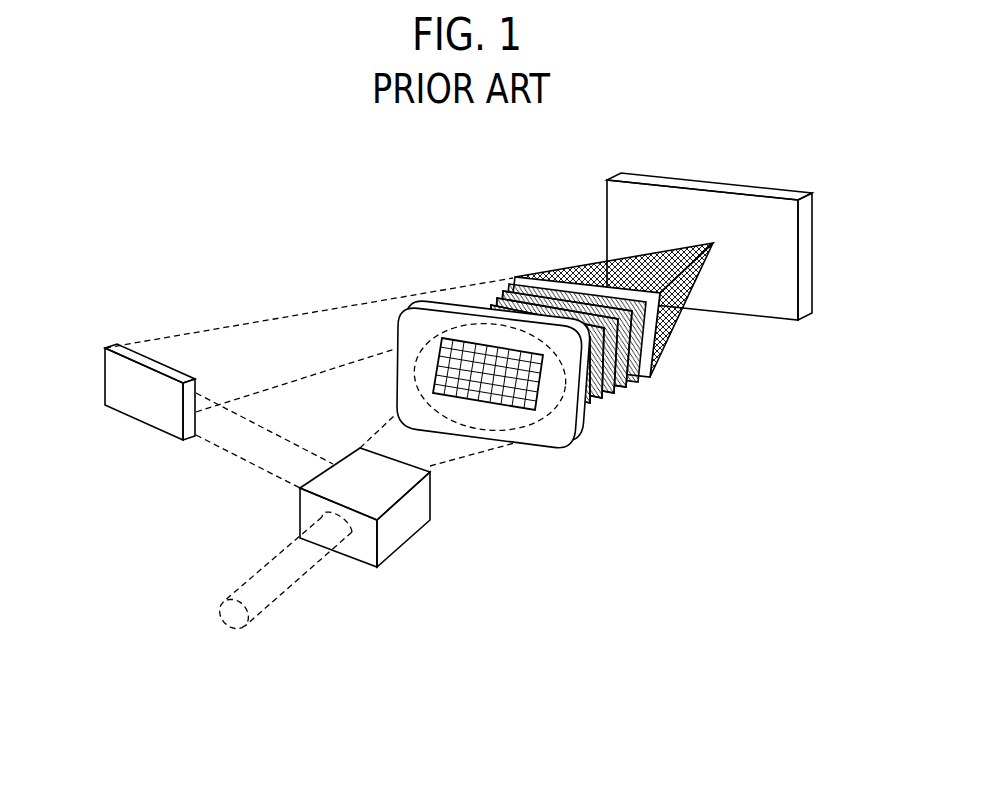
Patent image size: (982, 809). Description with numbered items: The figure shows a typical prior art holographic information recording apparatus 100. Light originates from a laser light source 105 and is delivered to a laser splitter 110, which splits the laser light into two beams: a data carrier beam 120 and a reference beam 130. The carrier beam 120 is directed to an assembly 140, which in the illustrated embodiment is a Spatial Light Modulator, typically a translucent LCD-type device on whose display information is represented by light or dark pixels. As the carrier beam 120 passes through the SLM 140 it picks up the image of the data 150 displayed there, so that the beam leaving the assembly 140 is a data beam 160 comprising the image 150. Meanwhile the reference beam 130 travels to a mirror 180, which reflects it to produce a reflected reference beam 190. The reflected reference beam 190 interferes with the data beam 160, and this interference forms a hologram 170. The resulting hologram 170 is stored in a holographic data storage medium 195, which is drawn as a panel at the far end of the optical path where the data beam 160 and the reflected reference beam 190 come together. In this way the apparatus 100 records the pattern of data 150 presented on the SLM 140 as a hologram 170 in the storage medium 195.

The holographic information recording apparatus 100 is at (542, 625).
The laser light source 105 is at (290, 583).
The laser splitter 110 is at (418, 530).
The data carrier beam 120 is at (430, 466).
The reference beam 130 is at (268, 473).
The assembly 140 is at (582, 438).
The data 150 is at (455, 348).
The data beam 160 is at (513, 278).
The hologram 170 is at (567, 267).
The mirror 180 is at (105, 348).
The reflected reference beam 190 is at (320, 312).
The holographic data storage medium 195 is at (810, 305).